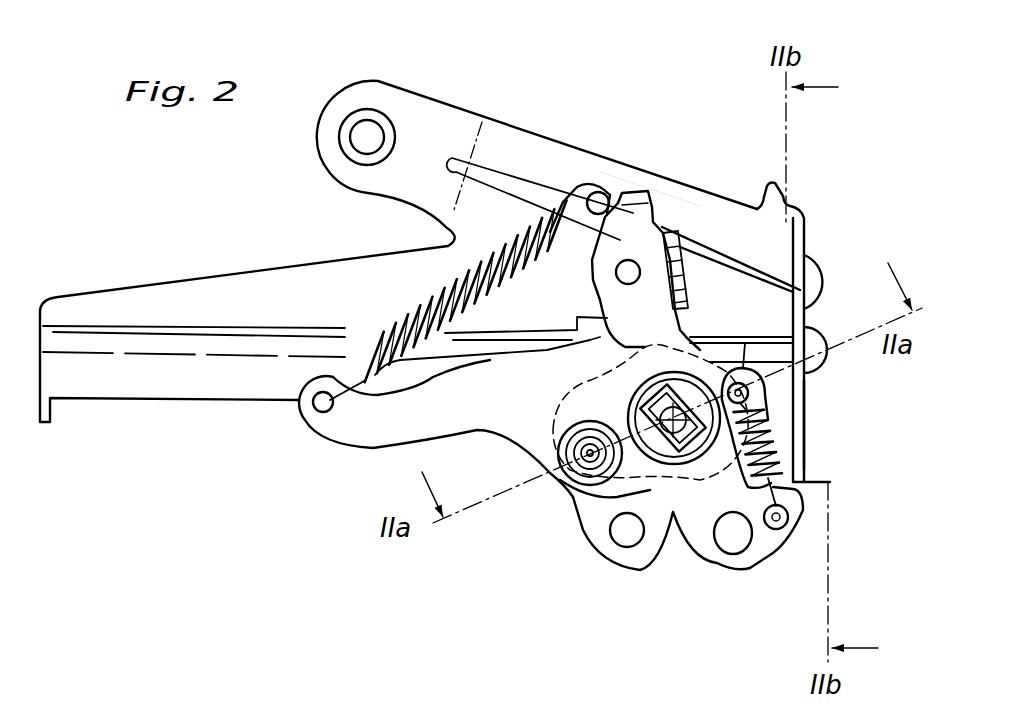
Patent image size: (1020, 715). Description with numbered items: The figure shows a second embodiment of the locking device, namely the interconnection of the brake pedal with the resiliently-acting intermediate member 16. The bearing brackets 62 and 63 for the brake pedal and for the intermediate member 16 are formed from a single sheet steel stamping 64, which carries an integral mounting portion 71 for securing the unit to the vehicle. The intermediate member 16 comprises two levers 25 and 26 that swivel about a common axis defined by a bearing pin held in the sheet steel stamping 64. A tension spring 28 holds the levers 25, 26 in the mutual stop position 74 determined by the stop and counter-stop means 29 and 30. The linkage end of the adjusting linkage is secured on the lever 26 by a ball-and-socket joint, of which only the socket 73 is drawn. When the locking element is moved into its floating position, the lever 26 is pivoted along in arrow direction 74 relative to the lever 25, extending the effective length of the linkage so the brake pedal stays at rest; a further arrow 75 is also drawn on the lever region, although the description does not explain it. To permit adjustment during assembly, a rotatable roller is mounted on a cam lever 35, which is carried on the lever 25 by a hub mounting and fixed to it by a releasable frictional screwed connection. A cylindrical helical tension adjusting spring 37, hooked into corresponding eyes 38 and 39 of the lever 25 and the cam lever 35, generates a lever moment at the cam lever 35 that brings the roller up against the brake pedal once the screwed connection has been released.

The intermediate member 16 is at (722, 318).
The lever 25 is at (490, 435).
The lever 26 is at (638, 187).
The tension spring 28 is at (427, 297).
The stop means 29 is at (578, 316).
The counter-stop means 30 is at (593, 298).
The cam lever 35 is at (640, 568).
The adjusting spring 37 is at (773, 434).
The eye 38 is at (787, 547).
The eye 39 is at (750, 388).
The bearing bracket 62 is at (420, 90).
The bearing bracket 63 is at (817, 450).
The sheet steel stamping 64 is at (742, 203).
The mounting portion 71 is at (115, 283).
The socket 73 is at (670, 237).
The mutual stop position / arrow direction 74 is at (650, 347).
The stop 75 is at (645, 149).